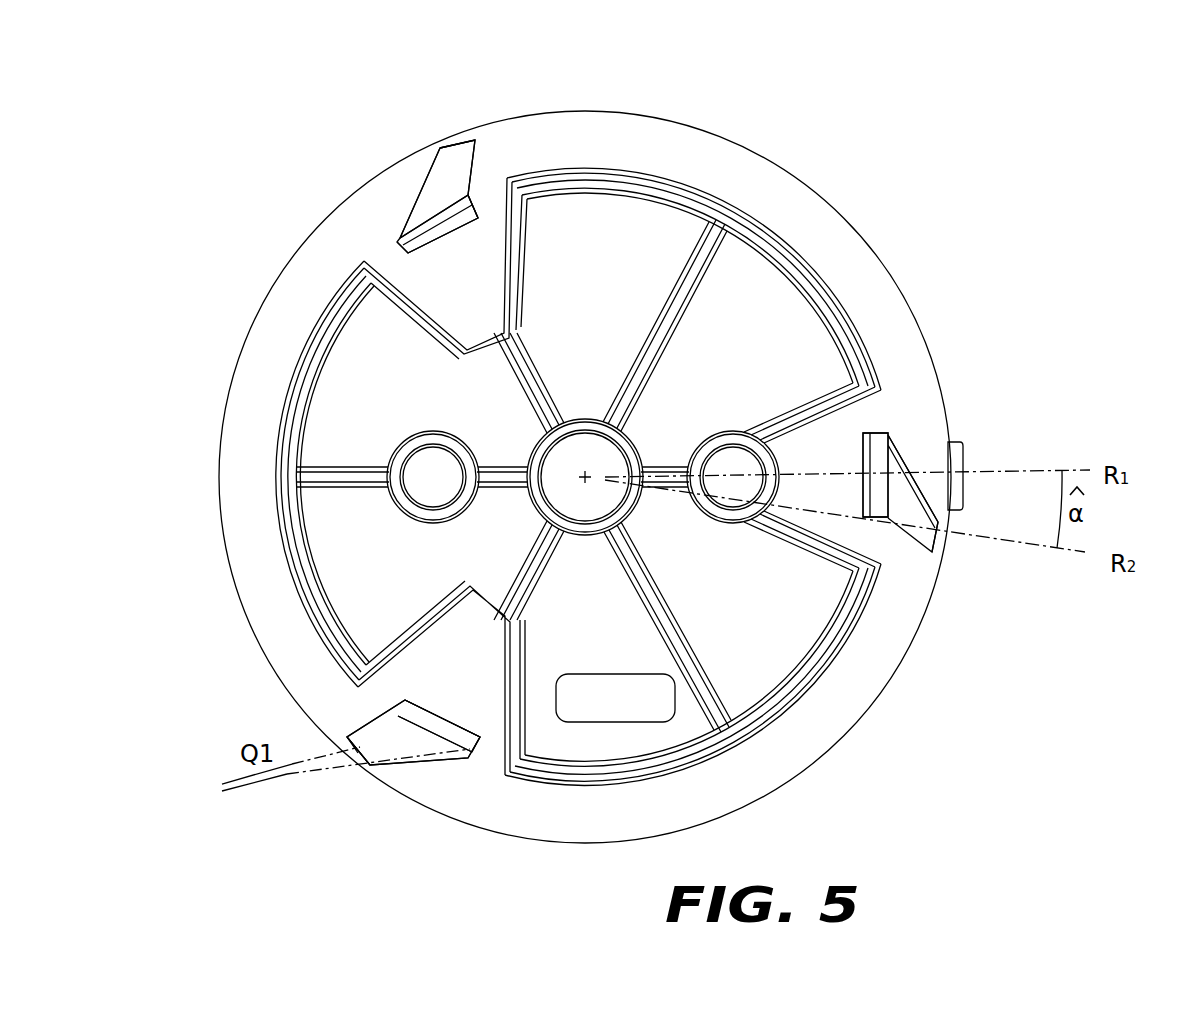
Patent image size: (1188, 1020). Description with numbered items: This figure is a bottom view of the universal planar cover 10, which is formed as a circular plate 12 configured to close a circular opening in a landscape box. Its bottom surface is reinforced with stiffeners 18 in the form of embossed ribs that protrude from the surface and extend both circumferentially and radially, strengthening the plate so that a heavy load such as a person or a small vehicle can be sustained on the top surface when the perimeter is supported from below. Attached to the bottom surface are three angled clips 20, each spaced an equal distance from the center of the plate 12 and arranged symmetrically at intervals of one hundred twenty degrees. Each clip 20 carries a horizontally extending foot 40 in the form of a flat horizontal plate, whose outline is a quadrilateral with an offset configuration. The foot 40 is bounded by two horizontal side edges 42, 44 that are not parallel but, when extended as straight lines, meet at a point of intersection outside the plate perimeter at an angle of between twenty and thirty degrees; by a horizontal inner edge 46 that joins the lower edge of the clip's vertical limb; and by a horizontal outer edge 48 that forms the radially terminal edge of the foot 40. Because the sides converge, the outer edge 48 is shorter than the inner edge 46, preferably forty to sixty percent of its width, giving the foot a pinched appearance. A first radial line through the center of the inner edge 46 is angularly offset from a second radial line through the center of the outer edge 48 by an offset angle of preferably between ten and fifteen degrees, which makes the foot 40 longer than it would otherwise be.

The planar cover 10 is at (959, 207).
The circular plate 12 is at (937, 382).
The stiffeners 18 is at (660, 185).
The angled clips 20 is at (461, 68).
The horizontally extending foot 40 is at (442, 196).
The horizontal side edge 42 is at (413, 207).
The horizontal side edge 44 is at (470, 165).
The horizontal inner edge 46 is at (442, 213).
The horizontal outer edge 48 is at (452, 140).